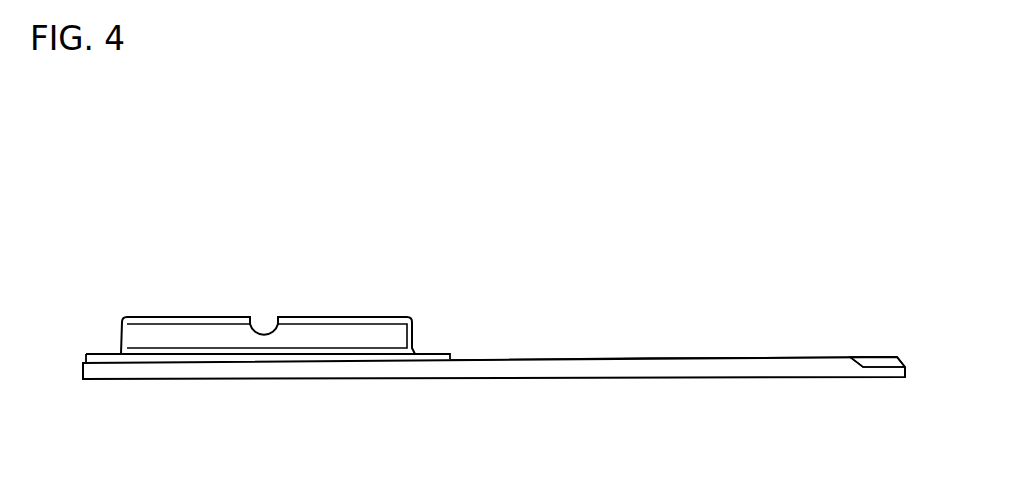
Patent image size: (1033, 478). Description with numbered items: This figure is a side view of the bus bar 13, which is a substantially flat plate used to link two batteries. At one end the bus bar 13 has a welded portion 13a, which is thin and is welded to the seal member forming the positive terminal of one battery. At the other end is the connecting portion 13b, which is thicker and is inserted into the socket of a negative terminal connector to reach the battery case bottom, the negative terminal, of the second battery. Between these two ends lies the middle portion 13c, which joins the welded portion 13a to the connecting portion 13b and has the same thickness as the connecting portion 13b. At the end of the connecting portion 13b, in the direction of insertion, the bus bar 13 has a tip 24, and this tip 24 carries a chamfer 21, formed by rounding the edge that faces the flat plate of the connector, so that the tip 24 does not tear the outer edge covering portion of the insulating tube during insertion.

The bus bar 13 is at (450, 385).
The welded portion 13a is at (343, 316).
The connecting portion 13b is at (768, 357).
The middle portion 13c is at (538, 357).
The chamfer 21 is at (897, 357).
The tip 24 is at (905, 378).